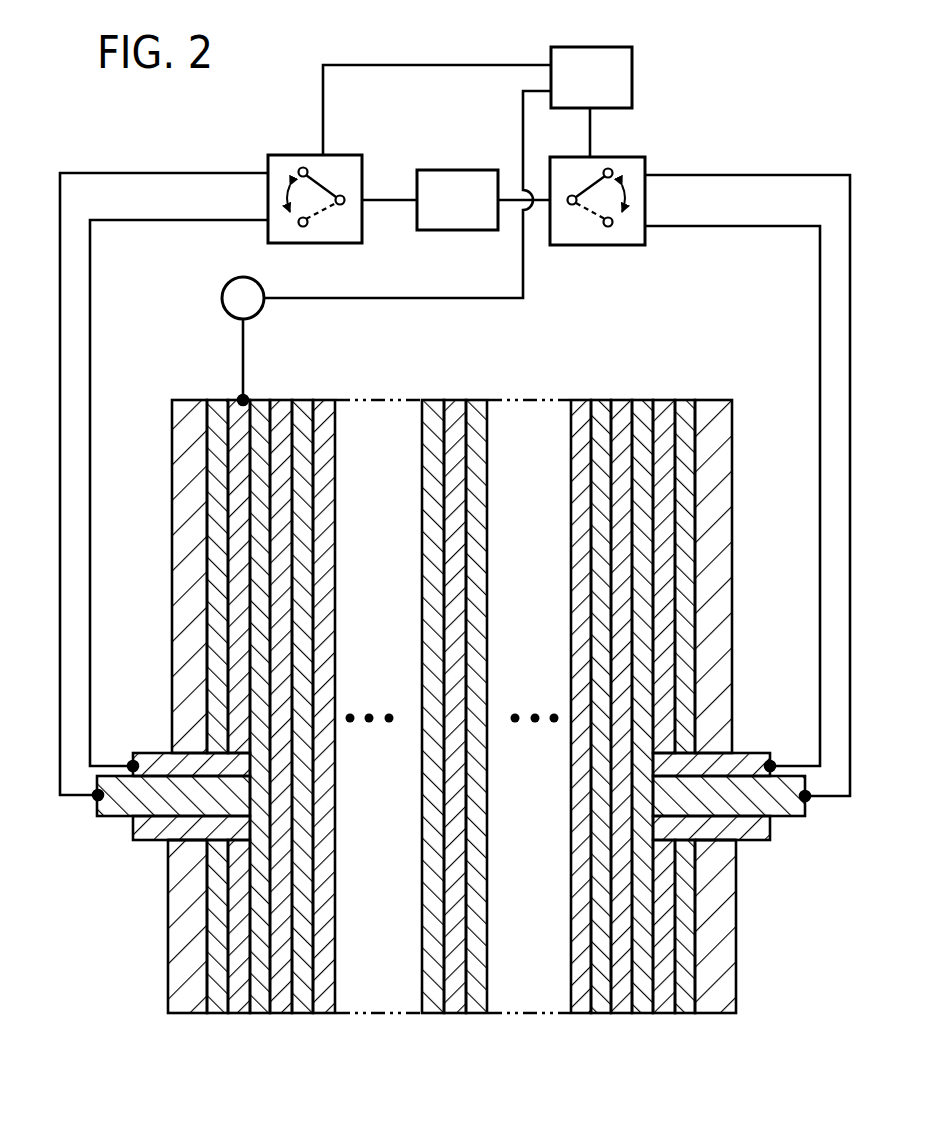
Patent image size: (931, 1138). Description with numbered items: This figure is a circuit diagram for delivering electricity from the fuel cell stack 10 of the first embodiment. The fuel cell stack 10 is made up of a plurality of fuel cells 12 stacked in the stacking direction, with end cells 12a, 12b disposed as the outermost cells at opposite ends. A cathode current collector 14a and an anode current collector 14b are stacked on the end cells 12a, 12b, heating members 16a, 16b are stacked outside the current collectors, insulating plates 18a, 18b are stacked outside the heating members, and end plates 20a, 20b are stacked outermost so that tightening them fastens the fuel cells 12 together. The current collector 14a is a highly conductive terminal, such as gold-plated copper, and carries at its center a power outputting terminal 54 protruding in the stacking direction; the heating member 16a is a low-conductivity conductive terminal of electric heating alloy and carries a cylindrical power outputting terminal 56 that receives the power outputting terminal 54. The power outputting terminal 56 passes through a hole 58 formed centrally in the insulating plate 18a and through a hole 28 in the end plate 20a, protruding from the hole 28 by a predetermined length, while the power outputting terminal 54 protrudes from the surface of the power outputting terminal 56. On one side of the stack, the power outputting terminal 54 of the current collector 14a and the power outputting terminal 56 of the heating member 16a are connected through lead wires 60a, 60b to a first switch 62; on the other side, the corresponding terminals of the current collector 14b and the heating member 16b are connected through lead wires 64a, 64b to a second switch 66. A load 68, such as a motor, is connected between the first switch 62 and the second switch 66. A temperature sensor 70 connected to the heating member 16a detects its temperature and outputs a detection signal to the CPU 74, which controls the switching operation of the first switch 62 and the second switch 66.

The fuel cell stack 10 is at (241, 111).
The fuel cells 12 is at (450, 733).
The end cell 12a is at (283, 1017).
The end cell 12b is at (622, 1017).
The cathode current collector 14a is at (258, 1017).
The anode current collector 14b is at (644, 1017).
The heating member 16a is at (241, 1017).
The heating member 16b is at (665, 1017).
The insulating plate 18a is at (206, 965).
The insulating plate 18b is at (696, 965).
The end plate 20a is at (162, 980).
The end plate 20b is at (742, 980).
The hole 28 is at (136, 760).
The power outputting terminal 54 is at (97, 811).
The cylindrical power outputting terminal 56 is at (133, 829).
The hole 58 is at (170, 841).
The lead wire 60a is at (164, 220).
The lead wire 60b is at (168, 172).
The first switch 62 is at (323, 258).
The lead wire 64a is at (745, 226).
The lead wire 64b is at (744, 175).
The second switch 66 is at (586, 259).
The load 68 is at (478, 169).
The temperature sensor 70 is at (243, 276).
The CPU 74 is at (613, 47).